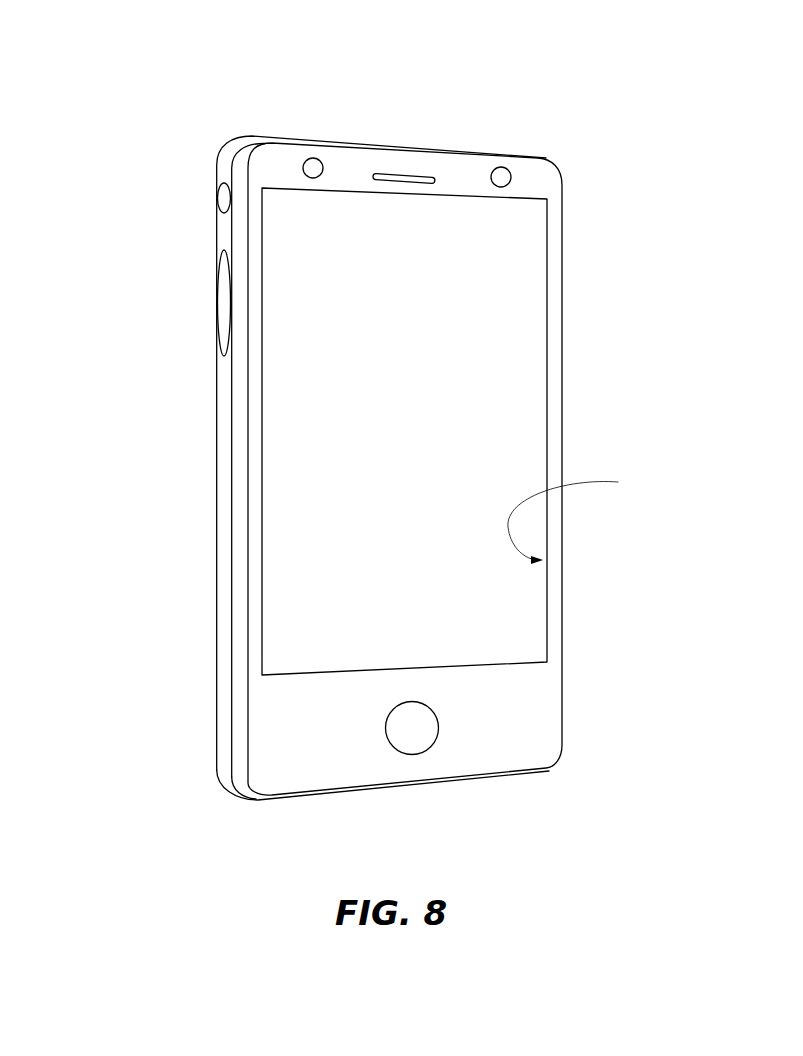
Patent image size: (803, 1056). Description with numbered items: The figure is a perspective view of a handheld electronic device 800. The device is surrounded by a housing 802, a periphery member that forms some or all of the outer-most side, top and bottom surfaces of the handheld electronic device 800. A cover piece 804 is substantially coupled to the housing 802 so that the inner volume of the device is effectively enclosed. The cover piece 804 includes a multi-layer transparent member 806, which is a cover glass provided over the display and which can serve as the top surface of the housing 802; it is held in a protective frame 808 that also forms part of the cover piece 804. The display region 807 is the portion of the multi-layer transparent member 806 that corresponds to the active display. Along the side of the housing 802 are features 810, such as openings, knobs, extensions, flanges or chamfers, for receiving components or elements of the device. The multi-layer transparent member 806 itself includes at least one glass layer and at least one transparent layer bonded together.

The handheld electronic device 800 is at (166, 84).
The housing 802 is at (222, 677).
The cover piece 804 is at (231, 614).
The multi-layer transparent member 806 is at (513, 365).
The display region 807 is at (598, 515).
The protective frame 808 is at (242, 588).
The features 810 is at (220, 203).